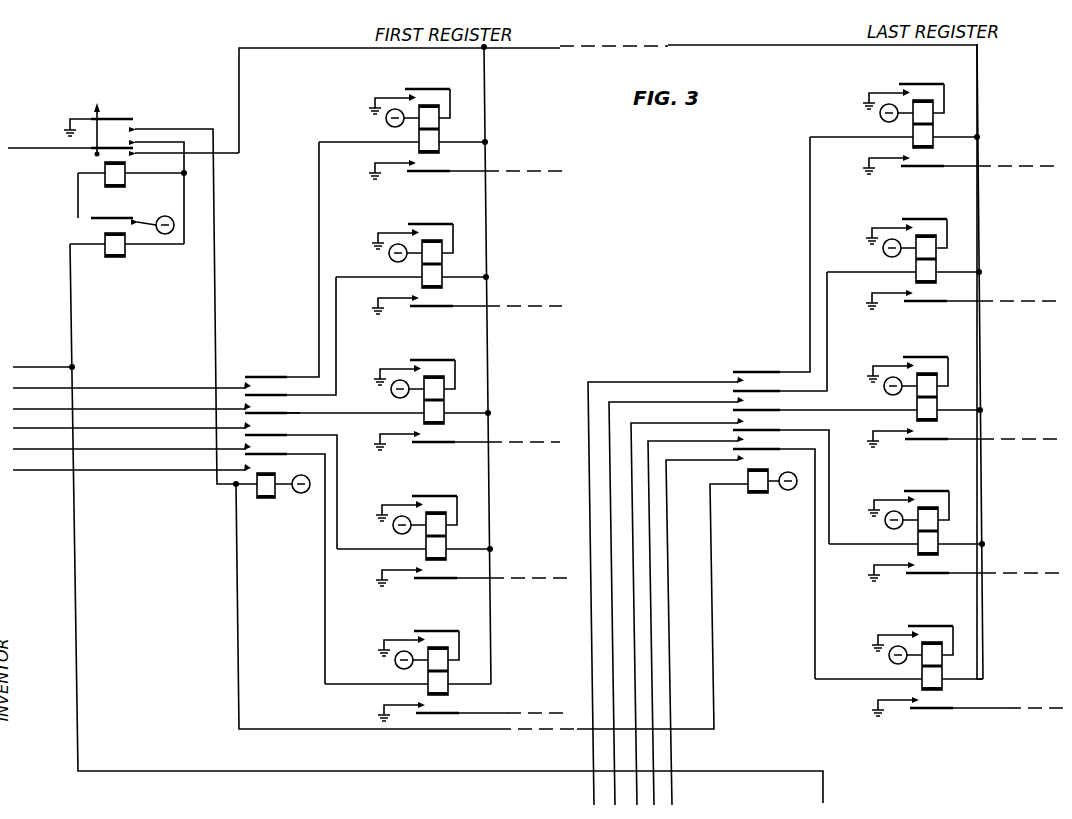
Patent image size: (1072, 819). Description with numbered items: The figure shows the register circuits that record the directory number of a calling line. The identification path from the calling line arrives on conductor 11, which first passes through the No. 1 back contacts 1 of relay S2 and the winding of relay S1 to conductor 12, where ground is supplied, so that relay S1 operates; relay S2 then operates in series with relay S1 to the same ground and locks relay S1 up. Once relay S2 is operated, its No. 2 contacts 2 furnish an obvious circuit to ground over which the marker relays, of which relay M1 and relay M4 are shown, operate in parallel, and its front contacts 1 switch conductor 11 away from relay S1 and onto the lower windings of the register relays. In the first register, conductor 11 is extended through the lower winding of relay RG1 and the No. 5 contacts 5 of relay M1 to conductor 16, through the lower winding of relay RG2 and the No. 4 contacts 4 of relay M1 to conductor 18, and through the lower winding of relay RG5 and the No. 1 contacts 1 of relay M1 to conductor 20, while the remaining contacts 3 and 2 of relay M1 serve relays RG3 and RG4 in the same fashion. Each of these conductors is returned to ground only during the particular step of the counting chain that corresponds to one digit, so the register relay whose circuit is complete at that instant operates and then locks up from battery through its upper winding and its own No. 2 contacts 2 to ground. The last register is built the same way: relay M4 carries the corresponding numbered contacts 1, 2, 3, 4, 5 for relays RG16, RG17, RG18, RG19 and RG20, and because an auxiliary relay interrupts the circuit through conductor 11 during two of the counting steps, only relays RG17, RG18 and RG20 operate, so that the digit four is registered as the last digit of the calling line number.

The conductor 11 is at (31, 134).
The conductor 12 is at (77, 322).
The conductor 16 is at (139, 378).
The conductor 18 is at (135, 410).
The conductor 20 is at (142, 471).
The relay S1 is at (118, 257).
The relay S2 is at (118, 184).
The relay M1 is at (266, 498).
The relay M4 is at (760, 493).
The No. 1 contacts 1 is at (285, 563).
The No. 2 contacts 2 is at (291, 486).
The No. 3 contacts 3 is at (272, 407).
The No. 4 contacts 4 is at (290, 336).
The No. 5 contacts 5 is at (282, 259).
The register relay RG1 is at (441, 139).
The register relay RG2 is at (444, 274).
The register relay RG3 is at (446, 410).
The register relay RG4 is at (448, 546).
The register relay RG5 is at (450, 681).
The register relay RG16 is at (935, 134).
The register relay RG17 is at (938, 269).
The register relay RG18 is at (939, 407).
The register relay RG19 is at (940, 541).
The register relay RG20 is at (944, 676).